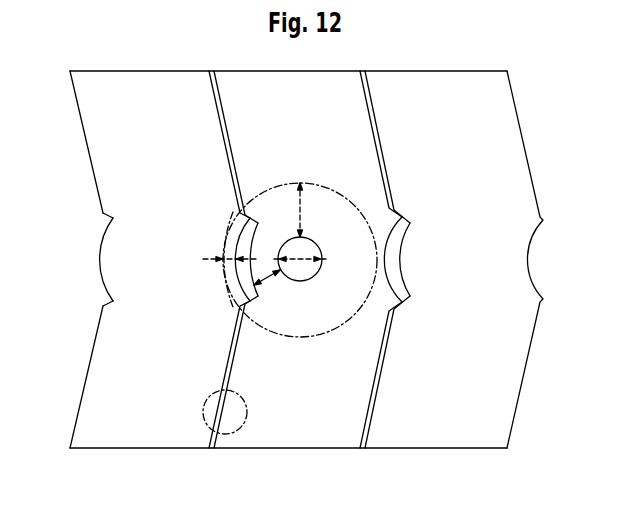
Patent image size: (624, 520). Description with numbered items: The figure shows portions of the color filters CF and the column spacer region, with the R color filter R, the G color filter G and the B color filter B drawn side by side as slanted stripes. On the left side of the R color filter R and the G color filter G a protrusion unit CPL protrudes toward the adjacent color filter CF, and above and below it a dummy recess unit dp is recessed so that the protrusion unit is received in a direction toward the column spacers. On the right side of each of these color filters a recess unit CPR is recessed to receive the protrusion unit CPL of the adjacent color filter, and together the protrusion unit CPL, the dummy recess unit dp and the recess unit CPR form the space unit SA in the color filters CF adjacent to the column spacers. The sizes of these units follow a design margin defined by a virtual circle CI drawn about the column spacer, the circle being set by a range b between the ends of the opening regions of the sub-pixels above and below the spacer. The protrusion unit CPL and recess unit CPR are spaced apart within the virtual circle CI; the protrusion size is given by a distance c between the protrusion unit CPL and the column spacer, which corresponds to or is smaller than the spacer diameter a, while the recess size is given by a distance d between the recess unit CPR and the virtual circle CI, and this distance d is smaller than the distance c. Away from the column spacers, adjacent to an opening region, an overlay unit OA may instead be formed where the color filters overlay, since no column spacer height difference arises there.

The color filter CF is at (523, 137).
The R color filter R is at (112, 259).
The G color filter G is at (309, 259).
The B color filter B is at (446, 102).
The protrusion unit CPL is at (100, 259).
The dummy recess unit dp is at (112, 217).
The recess unit CPR is at (236, 274).
The space unit SA is at (403, 279).
The virtual circle CI is at (233, 213).
The distance d is at (228, 250).
The range b is at (304, 212).
The diameter a is at (316, 274).
The distance c is at (270, 282).
The overlay unit OA is at (204, 414).